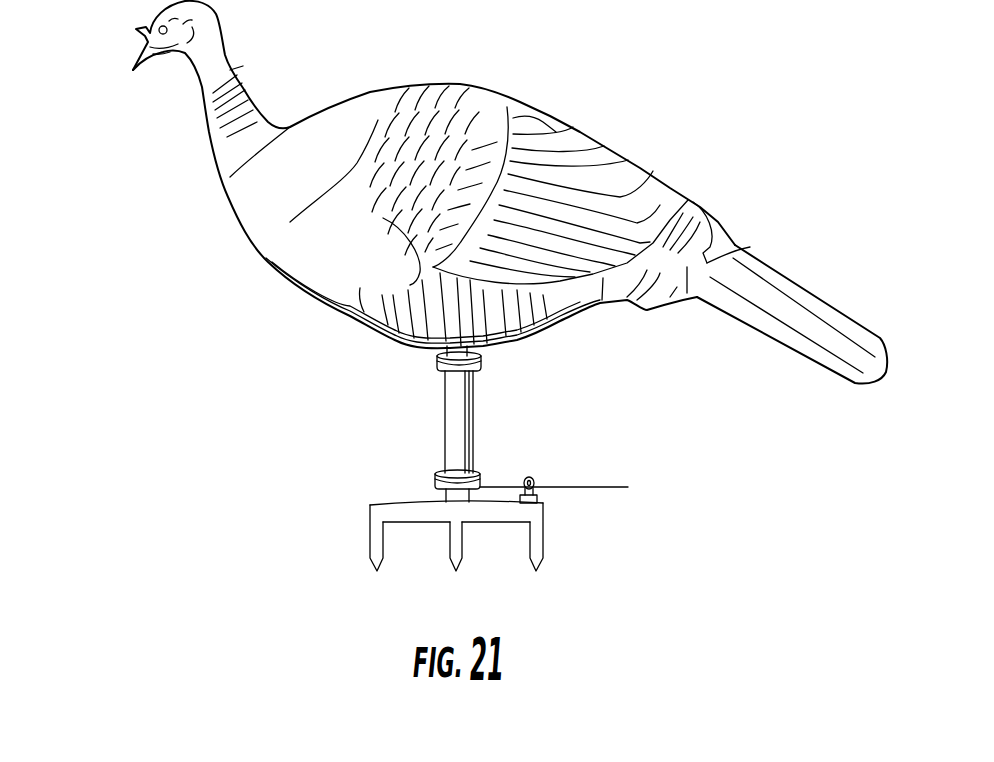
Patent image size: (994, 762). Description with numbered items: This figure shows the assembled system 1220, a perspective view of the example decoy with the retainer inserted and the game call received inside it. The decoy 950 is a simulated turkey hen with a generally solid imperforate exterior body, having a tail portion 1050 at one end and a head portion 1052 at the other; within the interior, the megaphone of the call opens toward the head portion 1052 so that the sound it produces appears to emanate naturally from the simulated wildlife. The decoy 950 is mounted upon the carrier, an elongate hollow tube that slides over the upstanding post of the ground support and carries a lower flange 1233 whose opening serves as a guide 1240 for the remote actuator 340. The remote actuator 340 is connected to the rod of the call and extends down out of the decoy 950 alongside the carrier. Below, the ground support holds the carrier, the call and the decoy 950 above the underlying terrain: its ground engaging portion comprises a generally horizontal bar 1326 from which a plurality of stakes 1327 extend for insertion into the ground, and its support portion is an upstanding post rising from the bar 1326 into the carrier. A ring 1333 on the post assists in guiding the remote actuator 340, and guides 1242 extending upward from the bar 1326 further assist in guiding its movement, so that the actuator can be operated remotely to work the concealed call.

The system 1220 is at (120, 176).
The head portion 1052 is at (220, 57).
The decoy 950 is at (688, 200).
The tail portion 1050 is at (750, 262).
The lower flange 1233 is at (430, 362).
The guide 1240 is at (457, 358).
The ring 1333 is at (478, 482).
The remote actuator 340 is at (607, 487).
The guides 1242 is at (540, 500).
The bar 1326 is at (417, 523).
The stakes 1327 is at (366, 558).